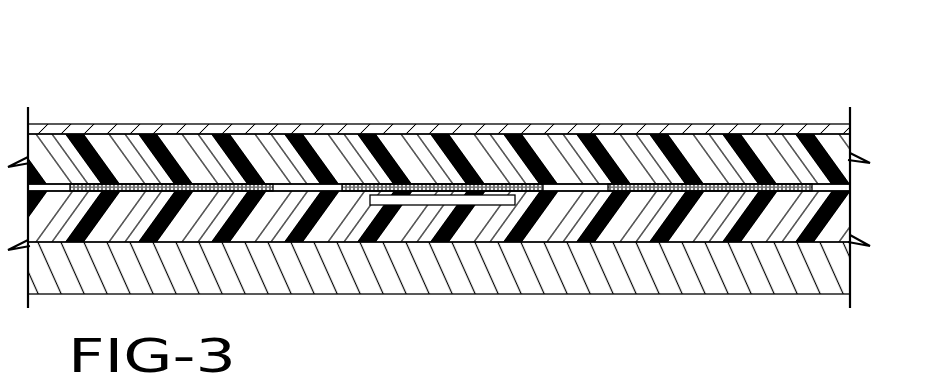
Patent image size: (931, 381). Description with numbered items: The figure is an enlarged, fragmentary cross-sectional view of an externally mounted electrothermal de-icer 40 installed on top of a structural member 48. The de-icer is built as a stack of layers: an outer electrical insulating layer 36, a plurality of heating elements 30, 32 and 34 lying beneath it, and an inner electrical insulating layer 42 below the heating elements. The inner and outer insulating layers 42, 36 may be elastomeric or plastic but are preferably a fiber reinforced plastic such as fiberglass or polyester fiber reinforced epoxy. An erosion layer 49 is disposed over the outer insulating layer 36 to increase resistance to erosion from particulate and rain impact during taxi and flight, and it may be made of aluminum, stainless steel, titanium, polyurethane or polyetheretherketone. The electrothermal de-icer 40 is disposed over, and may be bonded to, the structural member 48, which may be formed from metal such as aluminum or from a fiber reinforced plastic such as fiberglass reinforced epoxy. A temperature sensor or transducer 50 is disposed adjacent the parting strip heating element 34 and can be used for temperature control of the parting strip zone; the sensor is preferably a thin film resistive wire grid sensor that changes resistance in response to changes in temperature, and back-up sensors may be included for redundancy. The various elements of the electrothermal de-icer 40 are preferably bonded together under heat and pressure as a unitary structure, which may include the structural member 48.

The heating element 30 is at (645, 184).
The heating element 32 is at (205, 184).
The parting strip heating element 34 is at (428, 186).
The outer electrical insulating layer 36 is at (332, 140).
The electrothermal de-icer 40 is at (716, 86).
The inner electrical insulating layer 42 is at (552, 217).
The structural member 48 is at (725, 281).
The erosion layer 49 is at (87, 128).
The temperature sensor 50 is at (406, 201).